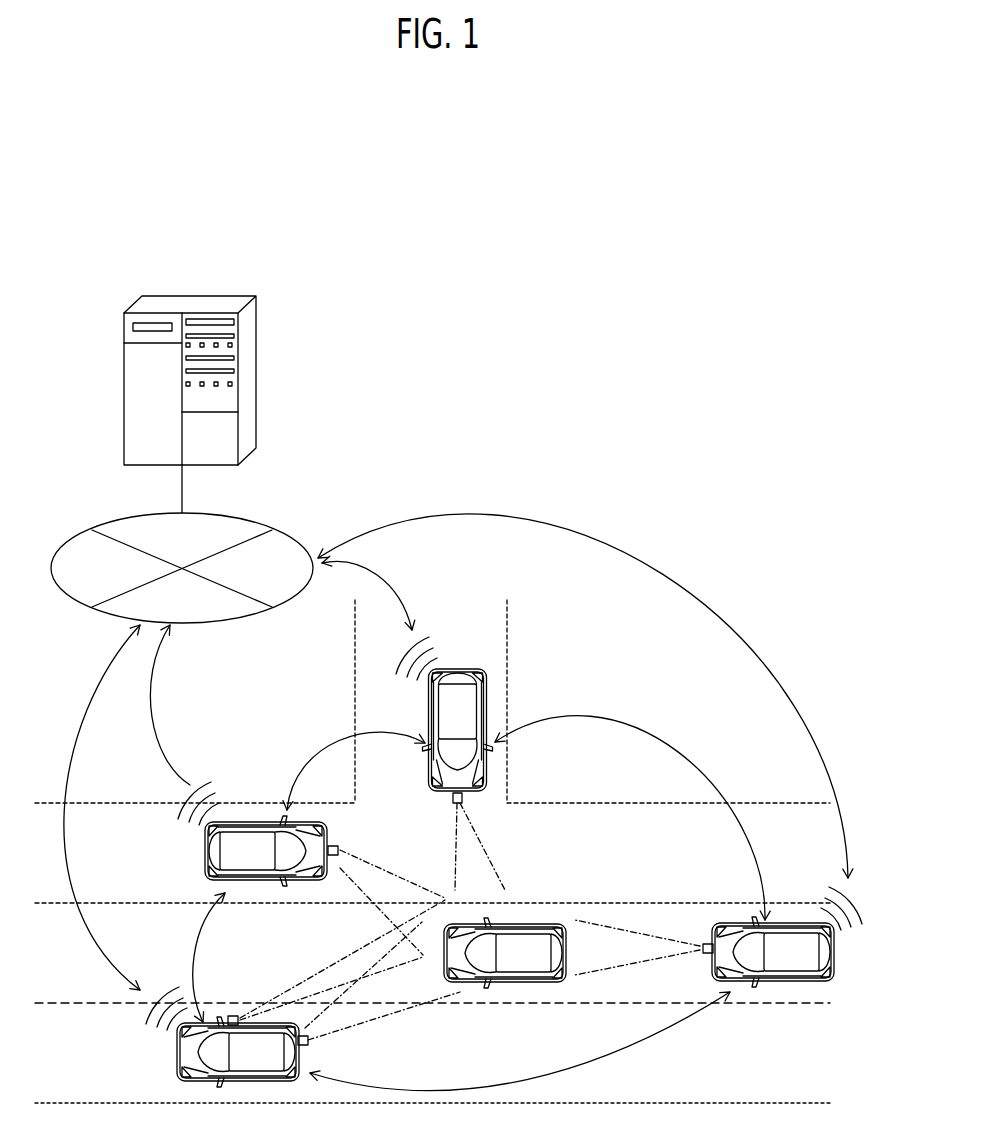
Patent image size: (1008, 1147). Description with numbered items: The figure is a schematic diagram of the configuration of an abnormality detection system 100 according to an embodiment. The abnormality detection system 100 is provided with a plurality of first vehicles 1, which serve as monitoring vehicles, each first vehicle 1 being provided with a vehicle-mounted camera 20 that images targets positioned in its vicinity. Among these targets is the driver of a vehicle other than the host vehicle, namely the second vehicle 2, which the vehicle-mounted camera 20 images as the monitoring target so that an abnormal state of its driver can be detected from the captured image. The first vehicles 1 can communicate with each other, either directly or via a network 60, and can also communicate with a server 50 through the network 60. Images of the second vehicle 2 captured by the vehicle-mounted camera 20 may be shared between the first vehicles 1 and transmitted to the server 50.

The first vehicle 1 is at (468, 703).
The second vehicle 2 is at (527, 940).
The vehicle-mounted camera 20 is at (338, 850).
The server 50 is at (256, 384).
The network 60 is at (247, 520).
The abnormality detection system 100 is at (532, 410).